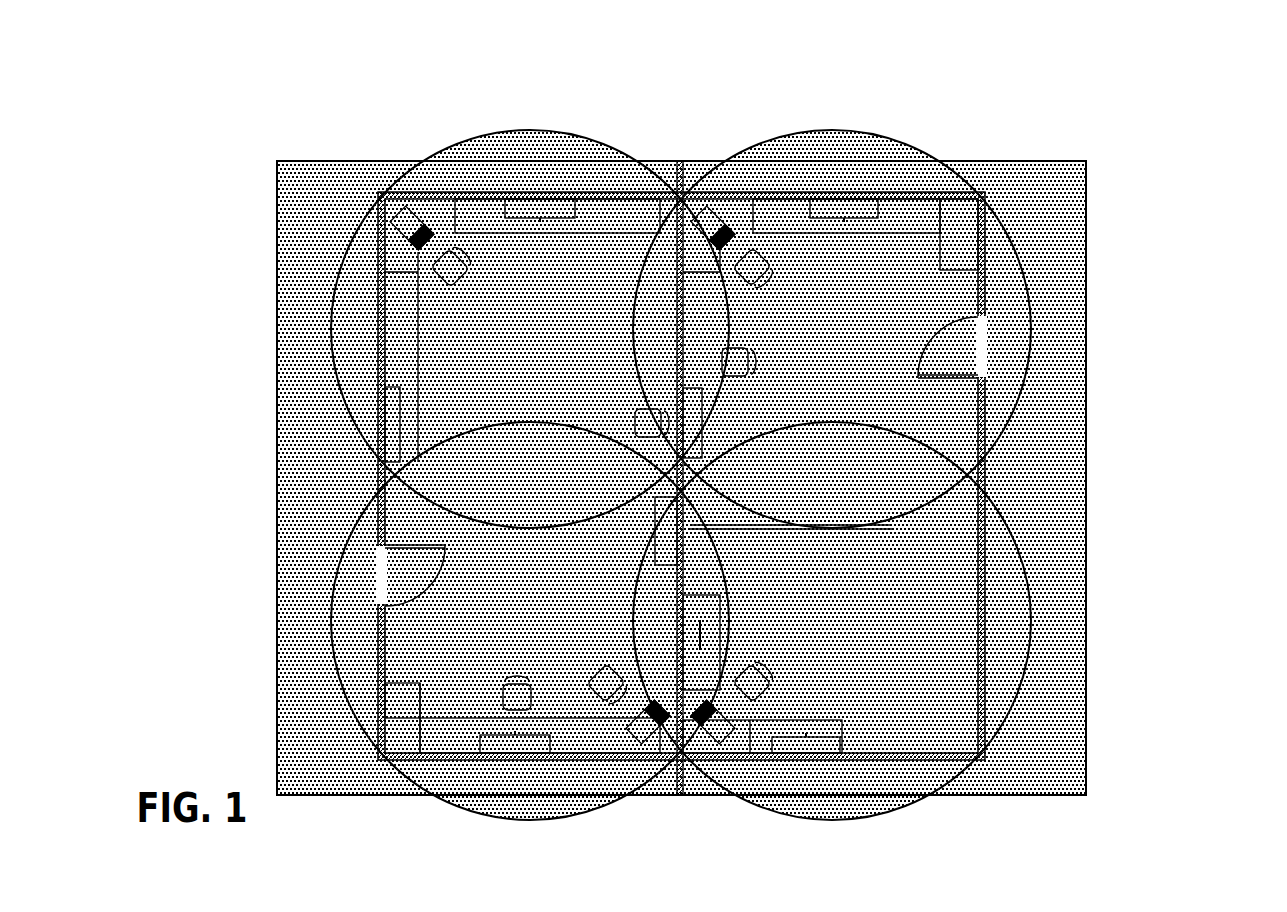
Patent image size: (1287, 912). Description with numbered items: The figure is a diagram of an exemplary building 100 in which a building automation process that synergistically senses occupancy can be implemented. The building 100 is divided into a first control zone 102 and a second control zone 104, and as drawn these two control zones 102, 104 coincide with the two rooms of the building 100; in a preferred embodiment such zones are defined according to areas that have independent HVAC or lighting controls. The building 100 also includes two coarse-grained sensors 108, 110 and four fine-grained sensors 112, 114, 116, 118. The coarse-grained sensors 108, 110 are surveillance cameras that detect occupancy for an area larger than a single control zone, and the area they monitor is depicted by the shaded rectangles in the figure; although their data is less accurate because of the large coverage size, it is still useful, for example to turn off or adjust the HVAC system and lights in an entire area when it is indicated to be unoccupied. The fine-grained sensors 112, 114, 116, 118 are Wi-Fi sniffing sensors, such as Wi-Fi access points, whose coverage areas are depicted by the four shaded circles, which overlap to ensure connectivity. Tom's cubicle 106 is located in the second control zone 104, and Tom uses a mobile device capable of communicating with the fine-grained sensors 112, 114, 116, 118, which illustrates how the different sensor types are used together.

The building 100 is at (680, 192).
The first control zone 102 is at (272, 87).
The second control zone 104 is at (683, 87).
The Tom's cubicle 106 is at (777, 694).
The coarse-grained sensor 108 is at (275, 199).
The coarse-grained sensor 110 is at (1089, 198).
The fine-grained sensor 112 is at (332, 348).
The fine-grained sensor 114 is at (1031, 320).
The fine-grained sensor 116 is at (332, 638).
The fine-grained sensor 118 is at (1033, 623).